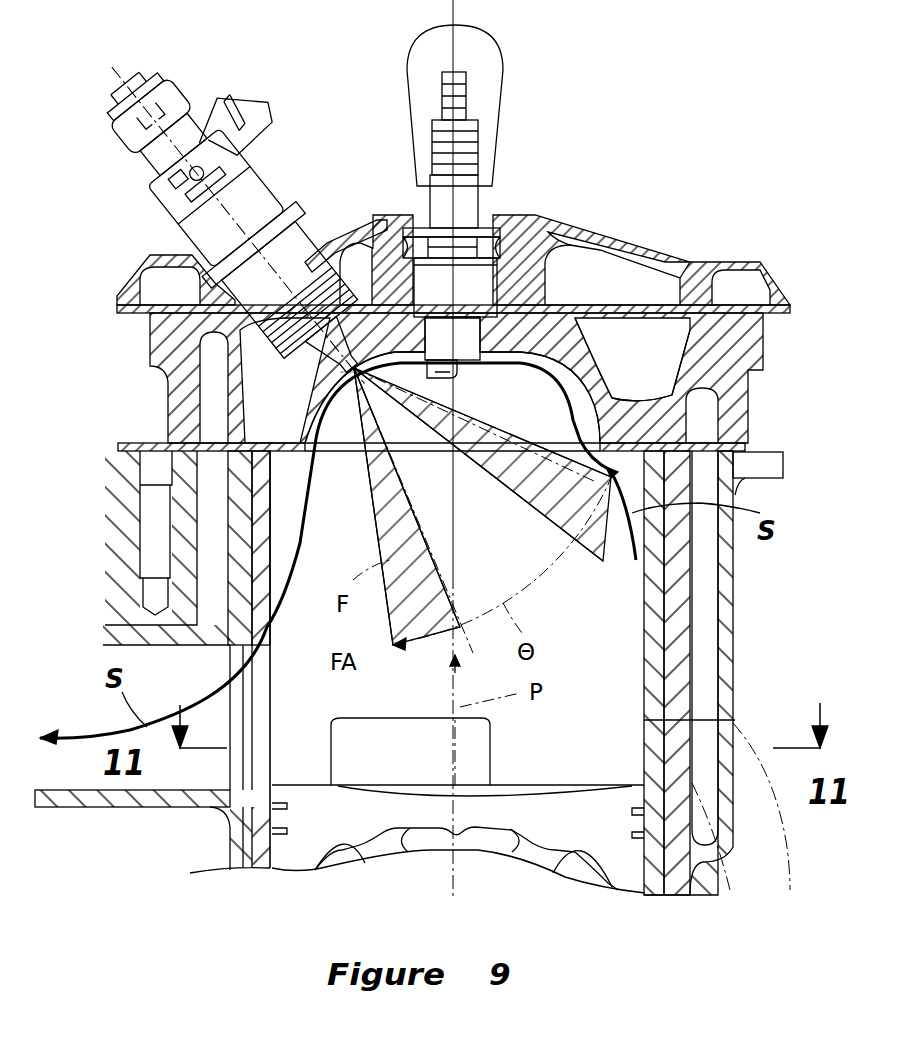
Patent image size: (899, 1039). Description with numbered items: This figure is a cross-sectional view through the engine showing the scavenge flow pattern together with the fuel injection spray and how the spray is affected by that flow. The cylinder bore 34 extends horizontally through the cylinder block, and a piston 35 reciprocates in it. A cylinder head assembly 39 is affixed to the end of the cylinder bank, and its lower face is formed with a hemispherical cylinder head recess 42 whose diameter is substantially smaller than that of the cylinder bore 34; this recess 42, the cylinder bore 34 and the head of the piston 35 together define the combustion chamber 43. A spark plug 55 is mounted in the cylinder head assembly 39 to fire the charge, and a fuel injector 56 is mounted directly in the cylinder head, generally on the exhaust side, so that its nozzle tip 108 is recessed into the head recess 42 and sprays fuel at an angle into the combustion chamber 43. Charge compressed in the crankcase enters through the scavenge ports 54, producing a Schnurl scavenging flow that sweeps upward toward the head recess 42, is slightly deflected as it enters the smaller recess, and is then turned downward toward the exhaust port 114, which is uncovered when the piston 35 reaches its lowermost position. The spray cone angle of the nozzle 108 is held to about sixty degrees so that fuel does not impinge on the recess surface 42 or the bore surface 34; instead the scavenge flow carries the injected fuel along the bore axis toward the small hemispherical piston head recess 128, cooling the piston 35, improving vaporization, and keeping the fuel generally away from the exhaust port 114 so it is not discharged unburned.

The cylinder bore 34 is at (307, 540).
The piston 35 is at (498, 808).
The cylinder head assembly 39 is at (765, 365).
The cylinder head recess 42 is at (615, 400).
The combustion chamber 43 is at (538, 410).
The scavenge port 54 is at (643, 738).
The spark plug 55 is at (483, 210).
The fuel injector 56 is at (275, 208).
The nozzle tip 108 is at (340, 372).
The exhaust port 114 is at (270, 800).
The piston head recess 128 is at (430, 773).